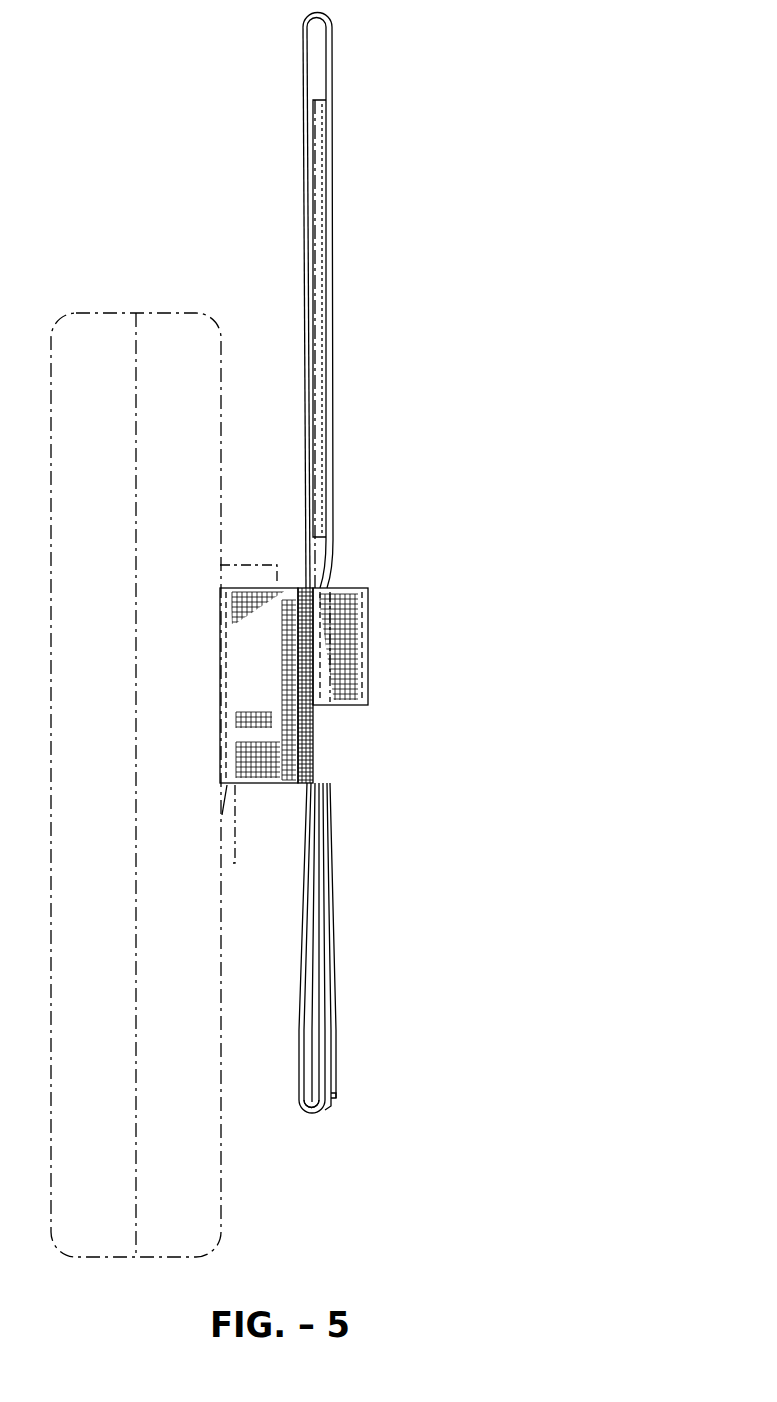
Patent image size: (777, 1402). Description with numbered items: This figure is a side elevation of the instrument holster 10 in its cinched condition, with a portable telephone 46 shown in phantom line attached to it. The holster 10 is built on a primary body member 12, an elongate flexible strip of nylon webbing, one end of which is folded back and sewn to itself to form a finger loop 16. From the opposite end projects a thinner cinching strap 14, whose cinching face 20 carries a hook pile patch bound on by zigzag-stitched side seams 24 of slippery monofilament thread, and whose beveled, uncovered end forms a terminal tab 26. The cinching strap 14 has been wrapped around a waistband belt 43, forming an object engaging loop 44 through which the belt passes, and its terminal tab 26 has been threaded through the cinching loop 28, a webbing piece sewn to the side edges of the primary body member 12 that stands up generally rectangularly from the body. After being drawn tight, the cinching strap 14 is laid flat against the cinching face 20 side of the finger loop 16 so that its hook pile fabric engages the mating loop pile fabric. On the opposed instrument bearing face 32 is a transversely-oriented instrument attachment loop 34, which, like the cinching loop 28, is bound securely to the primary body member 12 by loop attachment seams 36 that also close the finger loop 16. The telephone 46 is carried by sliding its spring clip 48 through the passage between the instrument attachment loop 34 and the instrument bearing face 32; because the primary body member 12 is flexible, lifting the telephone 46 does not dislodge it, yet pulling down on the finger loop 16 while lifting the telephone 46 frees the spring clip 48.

The instrument holster 10 is at (112, 148).
The primary body member 12 is at (304, 235).
The cinching strap 14 is at (326, 810).
The finger loop 16 is at (318, 1108).
The cinching face 20 is at (362, 834).
The side seams 24 is at (322, 775).
The terminal tab 26 is at (340, 1088).
The cinching loop 28 is at (368, 625).
The instrument bearing face 32 is at (272, 154).
The instrument attachment loop 34 is at (240, 680).
The loop attachment seams 36 is at (305, 588).
The waistband belt 43 is at (322, 220).
The object engaging loop 44 is at (316, 56).
The portable telephone 46 is at (115, 312).
The spring clip 48 is at (270, 565).